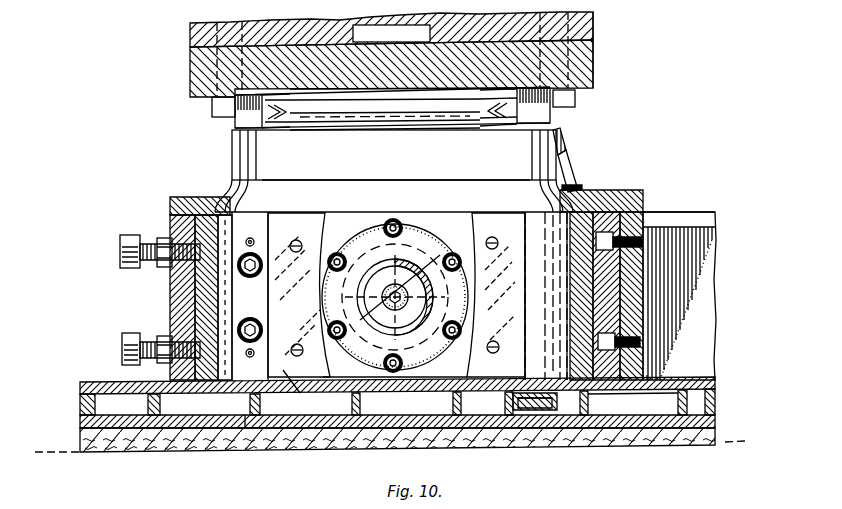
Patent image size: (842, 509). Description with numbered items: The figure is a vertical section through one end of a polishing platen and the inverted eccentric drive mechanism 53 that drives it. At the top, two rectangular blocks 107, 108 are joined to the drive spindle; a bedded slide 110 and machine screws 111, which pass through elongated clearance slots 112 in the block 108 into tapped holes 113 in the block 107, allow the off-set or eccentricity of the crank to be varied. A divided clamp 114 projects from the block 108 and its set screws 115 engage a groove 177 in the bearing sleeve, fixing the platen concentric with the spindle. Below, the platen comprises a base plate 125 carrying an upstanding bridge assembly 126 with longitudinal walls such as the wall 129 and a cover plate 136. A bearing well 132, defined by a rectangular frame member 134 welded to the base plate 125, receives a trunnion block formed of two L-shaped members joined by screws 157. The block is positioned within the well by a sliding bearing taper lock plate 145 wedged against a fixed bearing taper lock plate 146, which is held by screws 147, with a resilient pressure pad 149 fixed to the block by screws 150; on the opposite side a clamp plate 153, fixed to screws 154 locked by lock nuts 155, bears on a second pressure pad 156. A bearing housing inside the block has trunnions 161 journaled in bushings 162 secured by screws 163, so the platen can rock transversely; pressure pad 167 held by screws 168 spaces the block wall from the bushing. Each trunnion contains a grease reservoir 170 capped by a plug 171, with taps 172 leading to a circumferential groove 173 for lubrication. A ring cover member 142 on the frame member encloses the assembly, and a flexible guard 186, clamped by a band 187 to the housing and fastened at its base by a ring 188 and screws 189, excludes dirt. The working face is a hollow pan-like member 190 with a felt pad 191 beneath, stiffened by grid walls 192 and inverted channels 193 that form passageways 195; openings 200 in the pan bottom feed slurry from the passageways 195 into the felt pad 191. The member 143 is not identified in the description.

The eccentric drive mechanism 53 is at (362, 54).
The rectangular block 107 is at (207, 33).
The rectangular block 108 is at (198, 73).
The bedded slide 110 is at (392, 27).
The machine screws 111 is at (210, 106).
The elongated clearance slots 112 is at (597, 57).
The tapped holes 113 is at (600, 28).
The divided clamp 114 is at (245, 112).
The set screws 115 is at (290, 120).
The base plate 125 is at (95, 390).
The bridge assembly 126 is at (690, 210).
The wall 129 is at (680, 305).
The bearing well 132 is at (618, 135).
The frame member 134 is at (630, 270).
The cover plate 136 is at (693, 215).
The ring cover member 142 is at (197, 197).
The outer side plate 143 is at (177, 197).
The sliding bearing taper lock plate 145 is at (625, 197).
The fixed bearing taper lock plate 146 is at (635, 207).
The screws 147 is at (645, 215).
The pressure pad 149 is at (567, 360).
The screws 150 is at (557, 240).
The clamp plate 153 is at (205, 225).
The screws 154 is at (128, 244).
The lock nuts 155 is at (163, 242).
The pressure pad 156 is at (222, 280).
The screws 157 is at (249, 277).
The trunnions 161 is at (413, 243).
The bushings 162 is at (371, 240).
The screws 163 is at (340, 258).
The pressure pad 167 is at (502, 363).
The screws 168 is at (496, 345).
The grease reservoir 170 is at (383, 332).
The plug 171 is at (395, 295).
The taps 172 is at (436, 343).
The groove 173 is at (401, 253).
The groove 177 is at (410, 112).
The flexible annular guard 186 is at (567, 175).
The clamping band 187 is at (563, 148).
The ring 188 is at (208, 197).
The screws 189 is at (575, 185).
The pan-like member 190 is at (82, 422).
The felt pad 191 is at (90, 436).
The walls 192 is at (250, 410).
The inverted channels 193 is at (537, 400).
The passageways 195 is at (545, 410).
The openings 200 is at (540, 420).